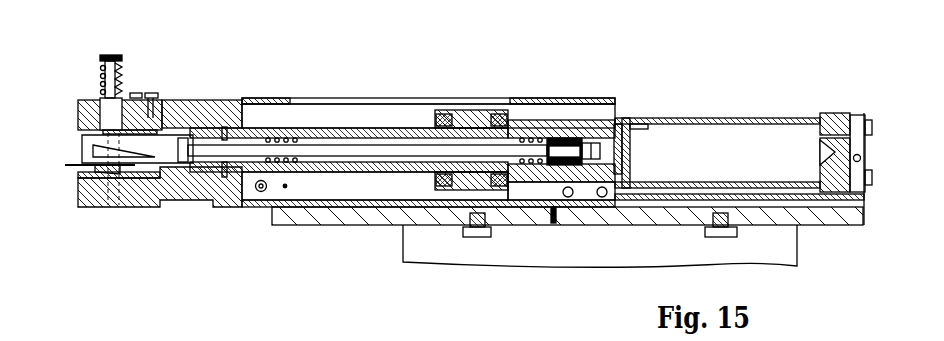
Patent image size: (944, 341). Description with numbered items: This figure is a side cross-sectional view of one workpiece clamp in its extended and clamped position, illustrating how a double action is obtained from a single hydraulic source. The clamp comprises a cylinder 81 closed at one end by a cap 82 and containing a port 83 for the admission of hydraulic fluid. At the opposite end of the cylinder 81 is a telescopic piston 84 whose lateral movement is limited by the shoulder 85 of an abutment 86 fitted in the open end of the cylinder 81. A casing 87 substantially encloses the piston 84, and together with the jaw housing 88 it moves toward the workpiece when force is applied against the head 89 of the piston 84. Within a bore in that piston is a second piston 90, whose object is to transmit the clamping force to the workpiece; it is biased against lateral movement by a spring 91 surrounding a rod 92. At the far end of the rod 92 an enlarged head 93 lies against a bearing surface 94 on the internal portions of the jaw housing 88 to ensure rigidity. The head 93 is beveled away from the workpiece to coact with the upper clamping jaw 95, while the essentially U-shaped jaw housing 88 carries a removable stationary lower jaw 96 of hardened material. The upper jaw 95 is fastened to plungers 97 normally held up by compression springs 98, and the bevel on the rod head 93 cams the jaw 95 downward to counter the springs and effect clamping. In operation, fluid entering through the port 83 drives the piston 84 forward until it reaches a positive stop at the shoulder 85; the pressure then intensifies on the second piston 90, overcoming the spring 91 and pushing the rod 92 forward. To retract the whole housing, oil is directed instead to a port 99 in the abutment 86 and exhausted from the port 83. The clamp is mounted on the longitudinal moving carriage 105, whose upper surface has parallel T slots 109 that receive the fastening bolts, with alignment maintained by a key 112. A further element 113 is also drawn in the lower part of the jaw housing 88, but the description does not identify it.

The cylinder 81 is at (683, 122).
The cap 82 is at (828, 116).
The port 83 is at (840, 120).
The telescopic piston 84 is at (623, 127).
The shoulder 85 is at (518, 122).
The abutment 86 is at (475, 112).
The casing 87 is at (573, 101).
The jaw housing 88 is at (186, 200).
The head 89 is at (645, 127).
The second piston 90 is at (567, 165).
The spring 91 is at (537, 164).
The rod 92 is at (365, 150).
The enlarged head 93 is at (187, 127).
The bearing surface 94 is at (165, 138).
The upper clamping jaw 95 is at (140, 177).
The lower jaw 96 is at (120, 178).
The plungers 97 is at (118, 57).
The springs 98 is at (122, 82).
The port 99 is at (493, 115).
The longitudinal moving carriage 105 is at (786, 250).
The T slots 109 is at (720, 237).
The key 112 is at (733, 226).
The screw 113 is at (260, 192).